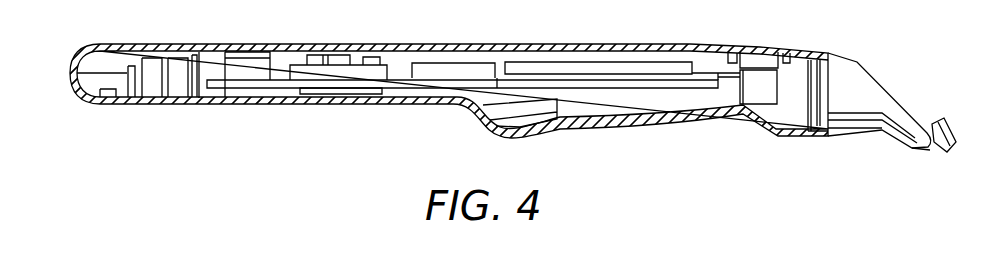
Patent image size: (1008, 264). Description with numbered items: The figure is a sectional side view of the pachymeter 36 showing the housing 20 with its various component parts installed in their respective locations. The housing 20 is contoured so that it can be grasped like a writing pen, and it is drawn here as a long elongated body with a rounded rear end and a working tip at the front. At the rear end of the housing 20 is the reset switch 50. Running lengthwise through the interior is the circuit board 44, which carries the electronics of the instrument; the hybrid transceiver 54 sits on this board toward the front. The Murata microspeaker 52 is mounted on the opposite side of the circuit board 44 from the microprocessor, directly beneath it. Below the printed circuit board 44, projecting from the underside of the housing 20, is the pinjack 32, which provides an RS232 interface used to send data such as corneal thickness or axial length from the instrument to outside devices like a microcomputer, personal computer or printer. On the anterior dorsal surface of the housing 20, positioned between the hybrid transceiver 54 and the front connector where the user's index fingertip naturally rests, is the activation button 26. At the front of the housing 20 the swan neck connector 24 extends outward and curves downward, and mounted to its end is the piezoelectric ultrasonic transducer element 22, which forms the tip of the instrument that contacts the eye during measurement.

The housing 20 is at (393, 105).
The piezoelectric ultrasonic transducer element 22 is at (945, 118).
The swan neck connector 24 is at (857, 61).
The activation button 26 is at (762, 47).
The pinjack connector 32 is at (535, 113).
The pachymeter 36 is at (942, 146).
The circuit board 44 is at (245, 83).
The reset switch 50 is at (110, 104).
The Murata microspeaker 52 is at (310, 95).
The hybrid transceiver 54 is at (648, 62).